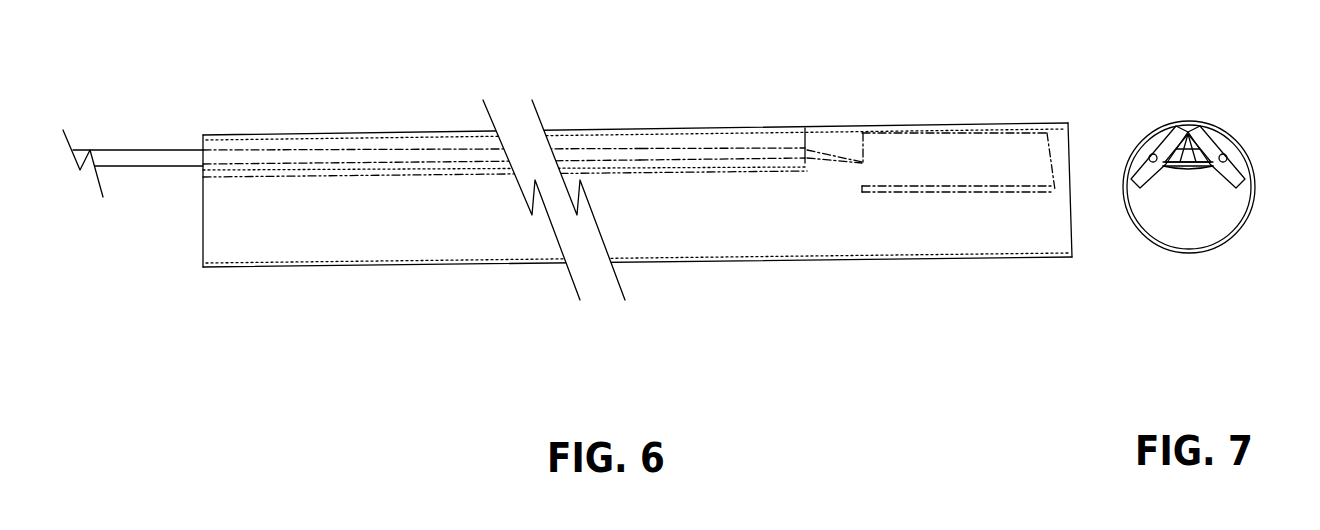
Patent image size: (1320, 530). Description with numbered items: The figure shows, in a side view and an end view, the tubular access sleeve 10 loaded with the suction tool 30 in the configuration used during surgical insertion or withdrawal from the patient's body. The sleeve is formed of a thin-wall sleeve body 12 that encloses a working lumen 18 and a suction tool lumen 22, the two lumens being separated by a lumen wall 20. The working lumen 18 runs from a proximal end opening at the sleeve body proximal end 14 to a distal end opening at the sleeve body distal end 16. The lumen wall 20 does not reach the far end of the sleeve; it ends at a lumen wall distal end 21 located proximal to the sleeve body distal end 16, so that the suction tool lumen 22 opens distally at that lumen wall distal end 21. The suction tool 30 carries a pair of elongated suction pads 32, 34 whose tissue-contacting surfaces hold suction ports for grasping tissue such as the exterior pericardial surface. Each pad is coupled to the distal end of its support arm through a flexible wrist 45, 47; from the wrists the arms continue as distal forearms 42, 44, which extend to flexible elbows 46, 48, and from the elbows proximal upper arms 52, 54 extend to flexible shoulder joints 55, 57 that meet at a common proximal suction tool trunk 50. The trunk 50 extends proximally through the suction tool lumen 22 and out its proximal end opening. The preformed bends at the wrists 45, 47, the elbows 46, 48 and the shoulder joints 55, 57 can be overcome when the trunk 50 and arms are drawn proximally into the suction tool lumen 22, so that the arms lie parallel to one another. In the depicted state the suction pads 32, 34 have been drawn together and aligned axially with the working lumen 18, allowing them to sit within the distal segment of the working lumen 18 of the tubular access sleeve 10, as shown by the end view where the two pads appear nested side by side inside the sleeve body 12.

In FIG. 6, the tubular access sleeve 10 is at (436, 295).
In FIG. 7, the tubular access sleeve 10 is at (1138, 256).
In FIG. 6, the sleeve body 12 is at (485, 265).
In FIG. 7, the sleeve body 12 is at (1205, 253).
In FIG. 6, the sleeve body proximal end 14 is at (203, 133).
In FIG. 6, the sleeve body distal end 16 is at (1068, 122).
In FIG. 6, the working lumen 18 is at (237, 237).
In FIG. 7, the working lumen 18 is at (1222, 203).
In FIG. 6, the lumen wall 20 is at (403, 175).
In FIG. 7, the lumen wall 20 is at (1172, 165).
In FIG. 6, the lumen wall distal end 21 is at (807, 132).
In FIG. 6, the suction tool lumen 22 is at (340, 138).
In FIG. 7, the suction tool lumen 22 is at (1180, 128).
In FIG. 6, the suction tool 30 is at (907, 225).
In FIG. 7, the suction tool 30 is at (1197, 180).
In FIG. 6, the suction pad 32 is at (957, 247).
In FIG. 7, the suction pad 32 is at (1163, 150).
In FIG. 6, the suction pad 34 is at (1023, 173).
In FIG. 7, the suction pad 34 is at (1213, 147).
In FIG. 6, the distal forearm 42 is at (879, 110).
In FIG. 6, the distal forearm 44 is at (813, 153).
In FIG. 6, the flexible wrist 45 is at (790, 228).
In FIG. 6, the flexible wrist 47 is at (863, 162).
In FIG. 6, the flexible elbow 46 is at (797, 101).
In FIG. 6, the flexible elbow 48 is at (777, 151).
In FIG. 6, the proximal suction tool trunk 50 is at (97, 150).
In FIG. 6, the proximal upper arm 52 is at (716, 101).
In FIG. 6, the proximal upper arm 54 is at (695, 152).
In FIG. 6, the flexible shoulder joint 55 is at (661, 85).
In FIG. 6, the flexible shoulder joint 57 is at (627, 150).